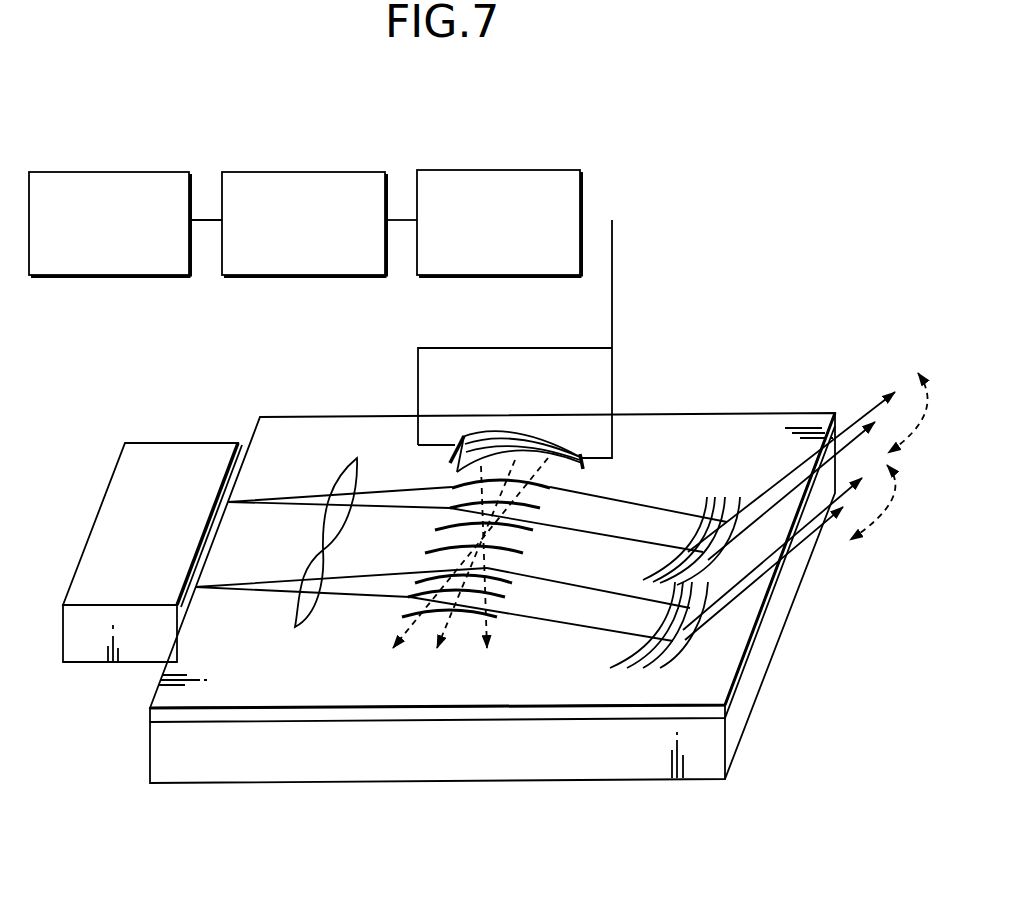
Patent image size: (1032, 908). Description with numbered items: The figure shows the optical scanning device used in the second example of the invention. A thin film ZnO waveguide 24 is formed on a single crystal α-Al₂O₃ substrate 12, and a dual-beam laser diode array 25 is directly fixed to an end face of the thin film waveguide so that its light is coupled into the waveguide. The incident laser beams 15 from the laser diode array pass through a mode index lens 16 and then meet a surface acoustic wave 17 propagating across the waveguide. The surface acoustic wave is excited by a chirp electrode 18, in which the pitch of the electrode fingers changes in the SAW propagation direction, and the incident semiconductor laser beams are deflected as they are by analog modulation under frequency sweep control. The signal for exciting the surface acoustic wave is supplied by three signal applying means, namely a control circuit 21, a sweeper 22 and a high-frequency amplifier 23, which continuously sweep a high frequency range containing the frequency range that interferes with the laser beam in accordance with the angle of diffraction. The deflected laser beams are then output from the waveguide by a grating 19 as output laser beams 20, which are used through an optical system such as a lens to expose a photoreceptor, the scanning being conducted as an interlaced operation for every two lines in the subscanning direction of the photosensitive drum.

The α-Al₂O₃ substrate 12 is at (244, 765).
The incident laser beams 15 is at (461, 553).
The mode index lens 16 is at (337, 528).
The surface acoustic wave 17 is at (447, 571).
The chirp electrode 18 is at (515, 346).
The grating 19 is at (682, 566).
The output laser beams 20 is at (805, 490).
The control circuit 21 is at (104, 171).
The sweeper 22 is at (298, 171).
The high-frequency amplifier 23 is at (497, 170).
The thin film ZnO waveguide 24 is at (606, 712).
The dual-beam laser diode array 25 is at (180, 442).